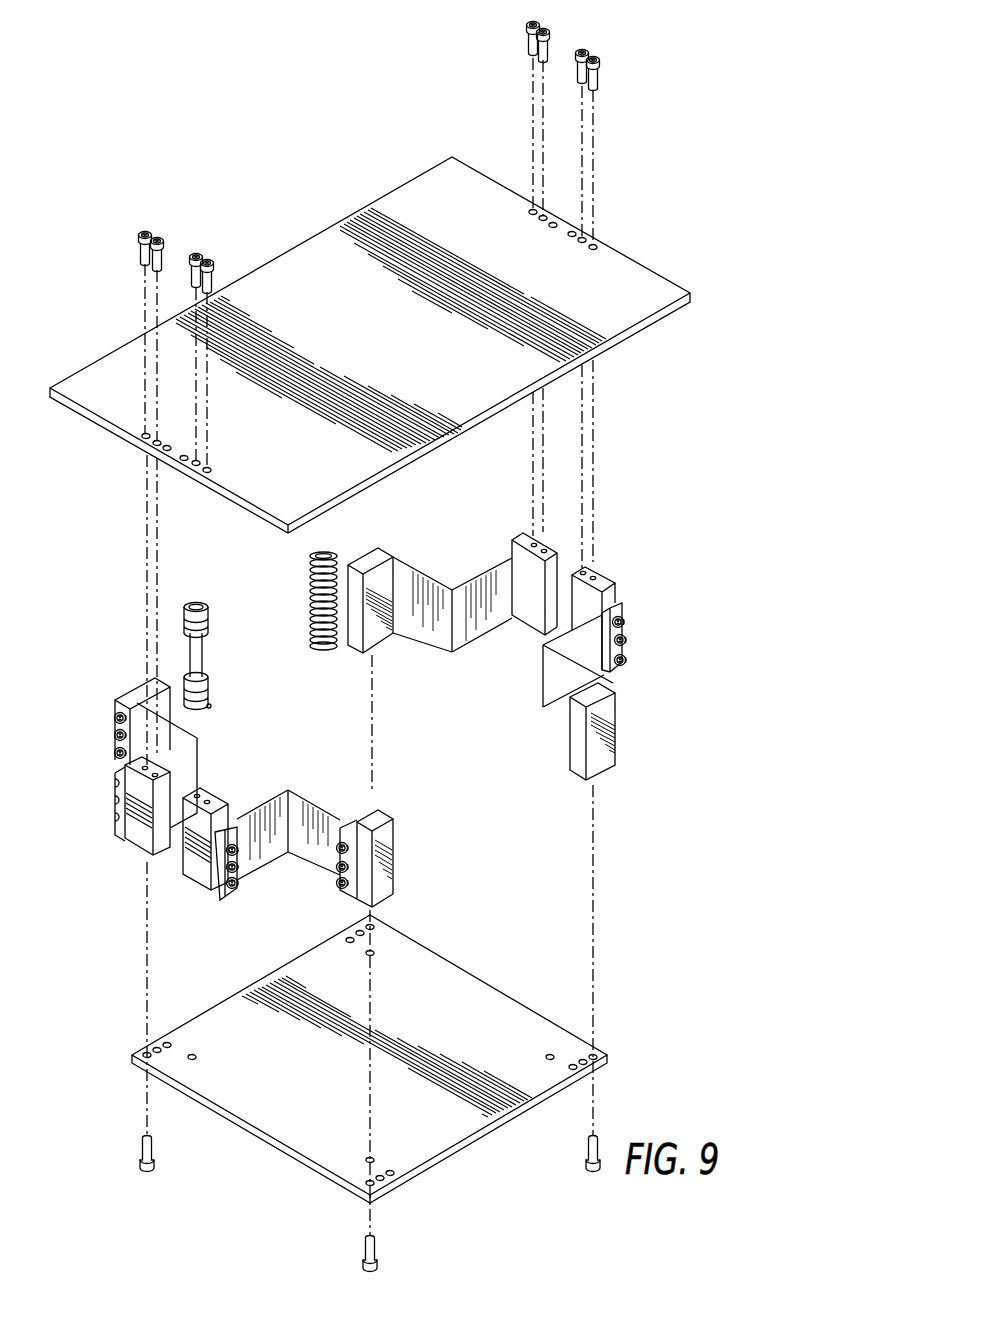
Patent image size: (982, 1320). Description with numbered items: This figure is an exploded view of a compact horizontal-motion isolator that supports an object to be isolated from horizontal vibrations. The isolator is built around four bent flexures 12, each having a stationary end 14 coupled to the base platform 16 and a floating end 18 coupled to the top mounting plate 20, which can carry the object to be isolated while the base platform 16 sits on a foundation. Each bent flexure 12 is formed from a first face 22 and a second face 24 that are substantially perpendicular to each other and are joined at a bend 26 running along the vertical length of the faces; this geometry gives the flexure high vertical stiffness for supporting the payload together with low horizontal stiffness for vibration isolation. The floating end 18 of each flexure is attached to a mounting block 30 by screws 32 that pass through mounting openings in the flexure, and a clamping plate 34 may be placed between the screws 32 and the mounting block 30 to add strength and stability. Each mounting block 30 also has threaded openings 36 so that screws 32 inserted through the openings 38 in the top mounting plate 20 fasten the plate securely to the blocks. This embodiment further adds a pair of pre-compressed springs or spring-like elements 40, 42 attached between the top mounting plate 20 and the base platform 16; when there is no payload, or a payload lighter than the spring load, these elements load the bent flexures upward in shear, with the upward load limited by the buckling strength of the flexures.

The bent flexure 12 is at (636, 674).
The stationary end 14 is at (392, 560).
The base platform 16 is at (417, 1130).
The floating end 18 is at (510, 553).
The top mounting plate 20 is at (416, 196).
The first face 22 is at (470, 612).
The second face 24 is at (410, 610).
The bend 26 is at (452, 632).
The mounting block 30 is at (606, 580).
The screw 32 is at (147, 232).
The clamping plate 34 is at (355, 866).
The threaded opening 36 is at (208, 801).
The opening 38 is at (594, 246).
The pre-compressed spring 40 is at (312, 600).
The pre-compressed spring-like element 42 is at (207, 616).